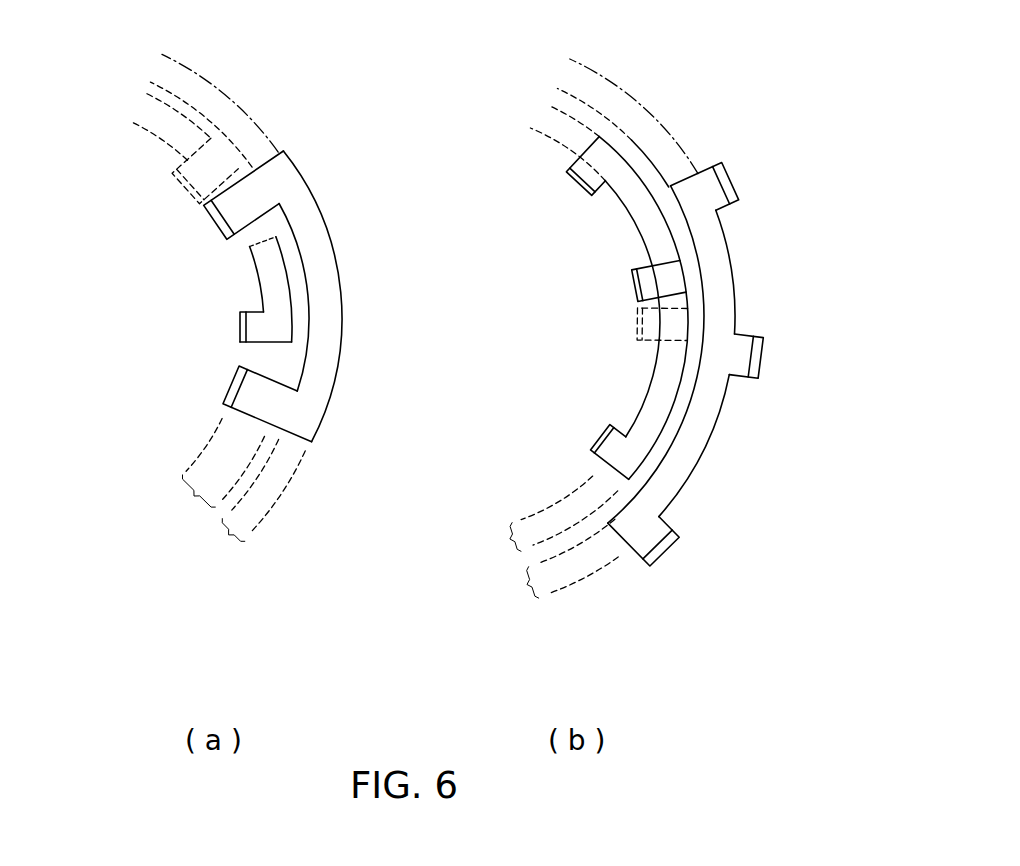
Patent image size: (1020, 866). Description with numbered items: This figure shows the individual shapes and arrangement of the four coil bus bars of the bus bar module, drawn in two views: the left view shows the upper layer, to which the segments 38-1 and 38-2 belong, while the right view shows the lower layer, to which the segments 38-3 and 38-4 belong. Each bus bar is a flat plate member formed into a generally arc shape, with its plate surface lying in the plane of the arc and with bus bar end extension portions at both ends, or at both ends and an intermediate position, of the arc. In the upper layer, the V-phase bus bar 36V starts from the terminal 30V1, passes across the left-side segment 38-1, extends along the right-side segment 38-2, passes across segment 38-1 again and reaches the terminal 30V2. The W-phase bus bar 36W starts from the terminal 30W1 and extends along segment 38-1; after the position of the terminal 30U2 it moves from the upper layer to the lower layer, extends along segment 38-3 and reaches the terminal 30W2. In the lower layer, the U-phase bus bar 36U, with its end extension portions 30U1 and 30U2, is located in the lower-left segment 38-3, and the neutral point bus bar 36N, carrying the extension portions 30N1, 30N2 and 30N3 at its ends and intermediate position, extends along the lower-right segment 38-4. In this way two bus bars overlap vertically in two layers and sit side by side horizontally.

The V-phase bus bar 36V is at (322, 307).
The W-phase bus bar 36W is at (273, 279).
The U-phase bus bar 36U is at (660, 387).
The neutral point bus bar 36N is at (717, 289).
The terminal 30V1 is at (230, 388).
The terminal 30V2 is at (213, 229).
The terminal 30W1 is at (240, 328).
The terminal 30W2 is at (572, 184).
The bus bar end extension portion 30U1 is at (595, 434).
The terminal 30U2 is at (636, 288).
The bus bar end extension portion 30N1 is at (667, 555).
The bus bar end extension portion 30N2 is at (763, 356).
The bus bar end extension portion 30N3 is at (733, 187).
The segment 38-1 is at (201, 474).
The segment 38-2 is at (241, 506).
The segment 38-3 is at (534, 526).
The segment 38-4 is at (540, 567).